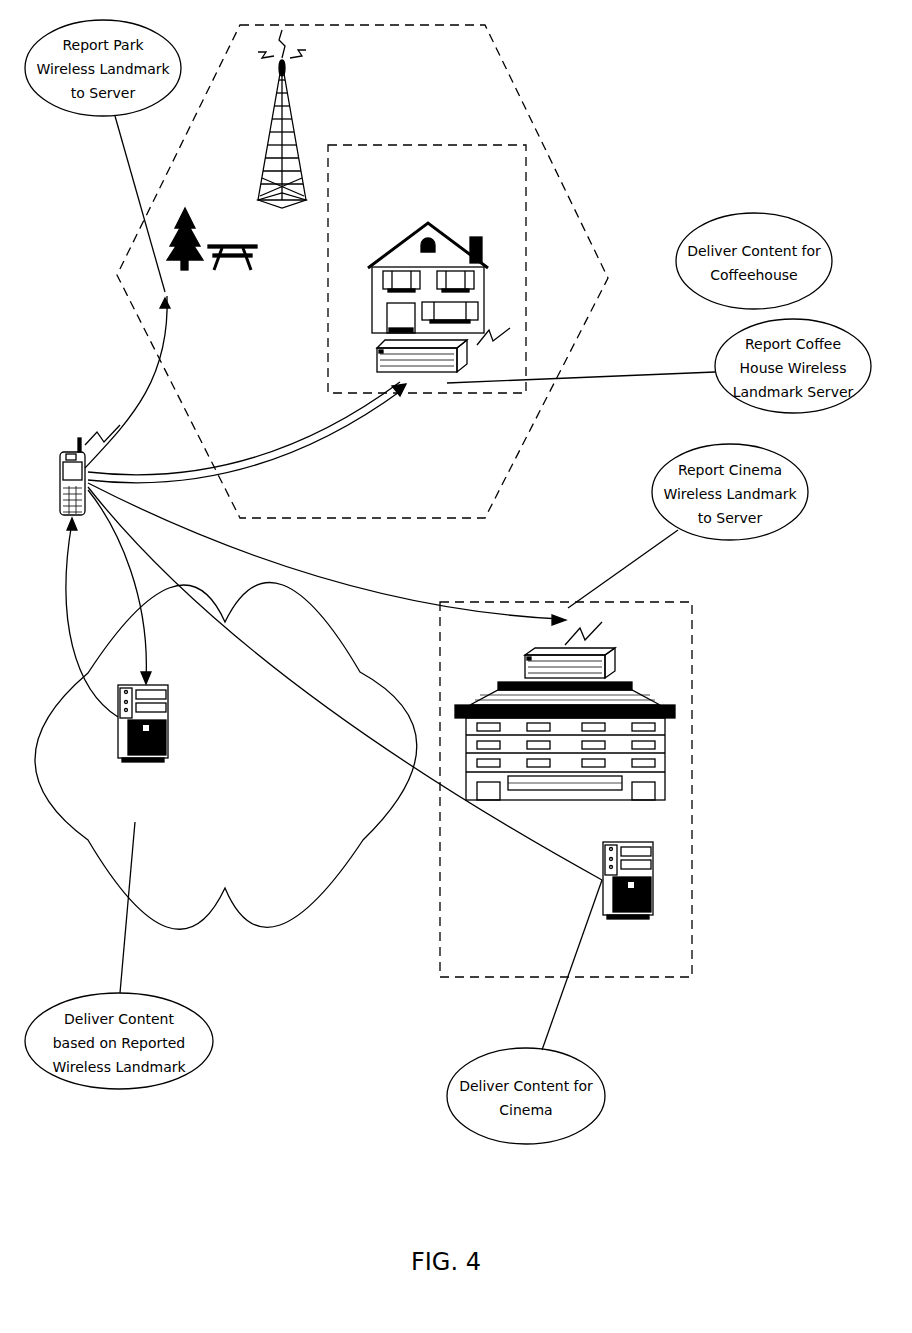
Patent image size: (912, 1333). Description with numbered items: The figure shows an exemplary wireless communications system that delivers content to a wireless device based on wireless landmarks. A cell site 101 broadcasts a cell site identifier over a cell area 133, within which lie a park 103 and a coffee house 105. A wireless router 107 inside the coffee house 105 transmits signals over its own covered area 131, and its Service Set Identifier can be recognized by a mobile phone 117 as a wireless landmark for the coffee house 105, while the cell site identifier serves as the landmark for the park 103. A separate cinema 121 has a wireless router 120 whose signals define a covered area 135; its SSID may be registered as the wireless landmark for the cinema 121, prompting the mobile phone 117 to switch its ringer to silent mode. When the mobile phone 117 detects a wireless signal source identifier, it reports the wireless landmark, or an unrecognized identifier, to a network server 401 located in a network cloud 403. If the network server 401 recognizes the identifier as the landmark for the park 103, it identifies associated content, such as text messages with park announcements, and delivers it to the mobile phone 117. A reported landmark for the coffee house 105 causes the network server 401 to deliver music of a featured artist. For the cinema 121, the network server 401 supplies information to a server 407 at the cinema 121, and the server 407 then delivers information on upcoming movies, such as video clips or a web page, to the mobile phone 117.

The cell site 101 is at (282, 145).
The park 103 is at (212, 262).
The coffee house 105 is at (428, 248).
The wireless router 107 is at (677, 287).
The mobile phone 117 is at (70, 456).
The wireless router 120 is at (617, 665).
The cinema 121 is at (565, 765).
The covered area 131 is at (505, 207).
The cell area 133 is at (478, 97).
The covered area 135 is at (438, 995).
The network server 401 is at (144, 747).
The network cloud 403 is at (226, 781).
The server 407 is at (628, 904).